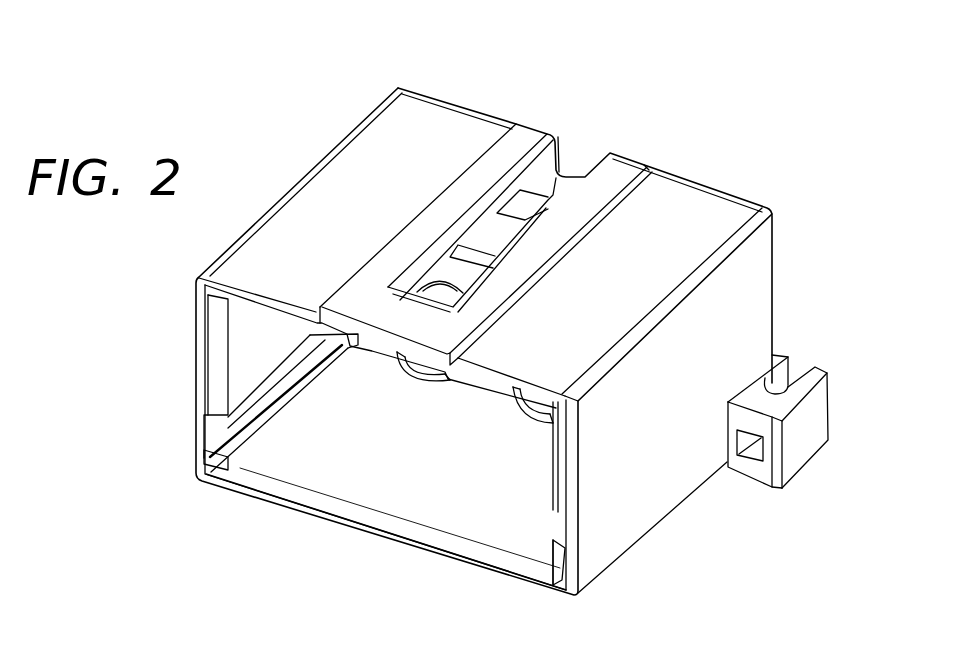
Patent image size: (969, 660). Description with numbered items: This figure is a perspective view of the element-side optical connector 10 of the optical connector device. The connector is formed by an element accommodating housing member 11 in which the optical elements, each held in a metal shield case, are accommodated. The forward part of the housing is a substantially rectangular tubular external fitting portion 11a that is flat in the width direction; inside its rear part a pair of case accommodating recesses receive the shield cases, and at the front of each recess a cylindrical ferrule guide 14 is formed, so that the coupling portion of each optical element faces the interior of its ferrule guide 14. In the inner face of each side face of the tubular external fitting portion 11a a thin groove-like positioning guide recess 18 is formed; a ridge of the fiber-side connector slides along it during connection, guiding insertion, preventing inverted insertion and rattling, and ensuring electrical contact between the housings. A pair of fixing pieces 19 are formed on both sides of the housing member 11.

The element-side optical connector 10 is at (318, 86).
The element accommodating housing member 11 is at (319, 160).
The tubular external fitting portion 11a is at (617, 546).
The ferrule guide 14 is at (530, 416).
The positioning guide recess 18 is at (222, 428).
The fixing piece 19 is at (802, 456).